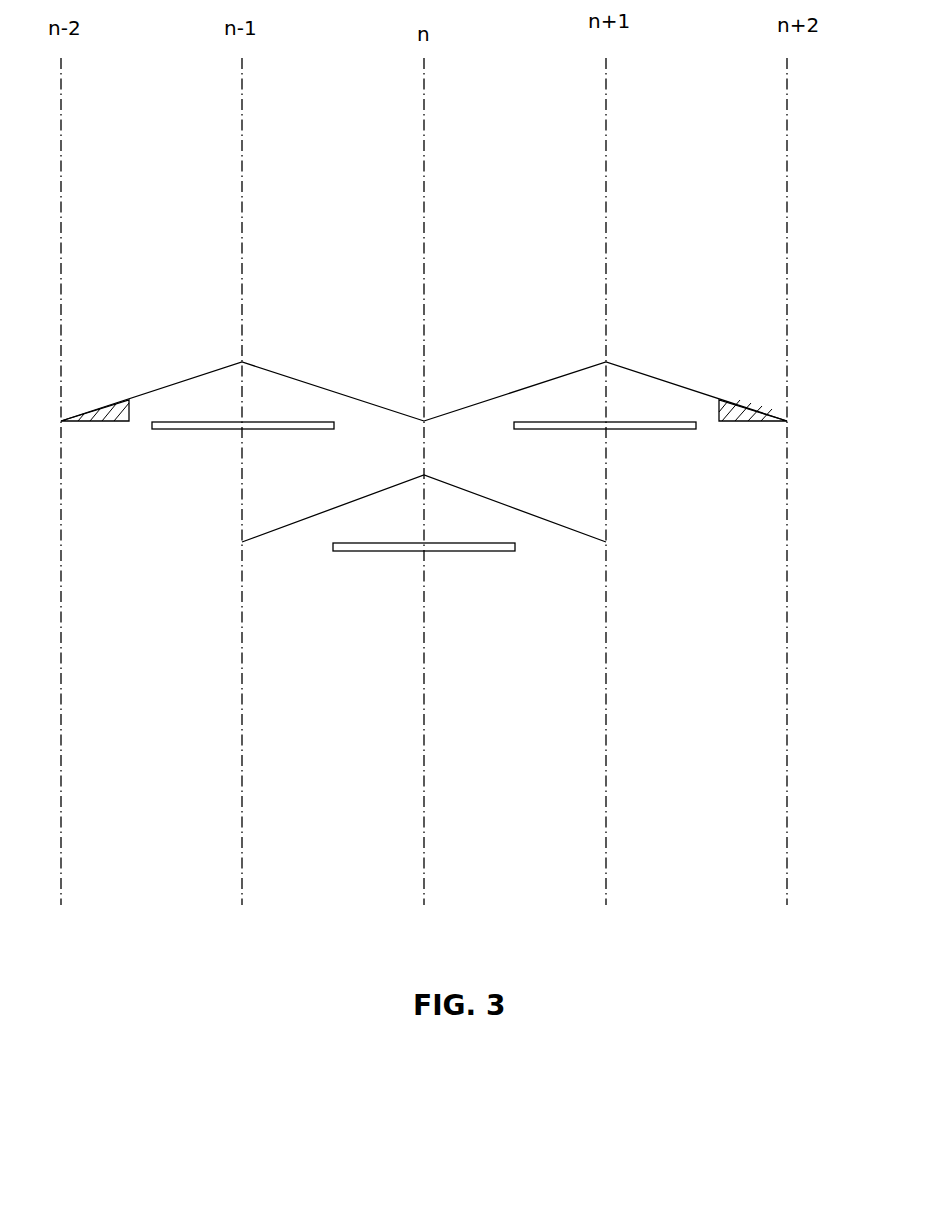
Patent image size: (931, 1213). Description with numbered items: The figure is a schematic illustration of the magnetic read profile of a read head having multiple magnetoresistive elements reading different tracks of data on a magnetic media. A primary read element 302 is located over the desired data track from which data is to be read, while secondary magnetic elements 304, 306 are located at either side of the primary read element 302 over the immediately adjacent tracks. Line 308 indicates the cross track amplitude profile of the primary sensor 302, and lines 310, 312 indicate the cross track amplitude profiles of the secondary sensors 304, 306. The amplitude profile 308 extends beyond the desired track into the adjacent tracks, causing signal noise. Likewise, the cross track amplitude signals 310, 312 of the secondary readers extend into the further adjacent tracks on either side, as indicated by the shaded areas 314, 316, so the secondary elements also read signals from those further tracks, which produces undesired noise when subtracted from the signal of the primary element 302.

The primary read element 302 is at (447, 547).
The secondary magnetic element 304 is at (615, 426).
The secondary magnetic element 306 is at (218, 426).
The cross track amplitude profile 308 is at (488, 500).
The cross track amplitude profile 310 is at (648, 375).
The cross track amplitude profile 312 is at (280, 373).
The shaded area 314 is at (752, 422).
The shaded area 316 is at (102, 422).